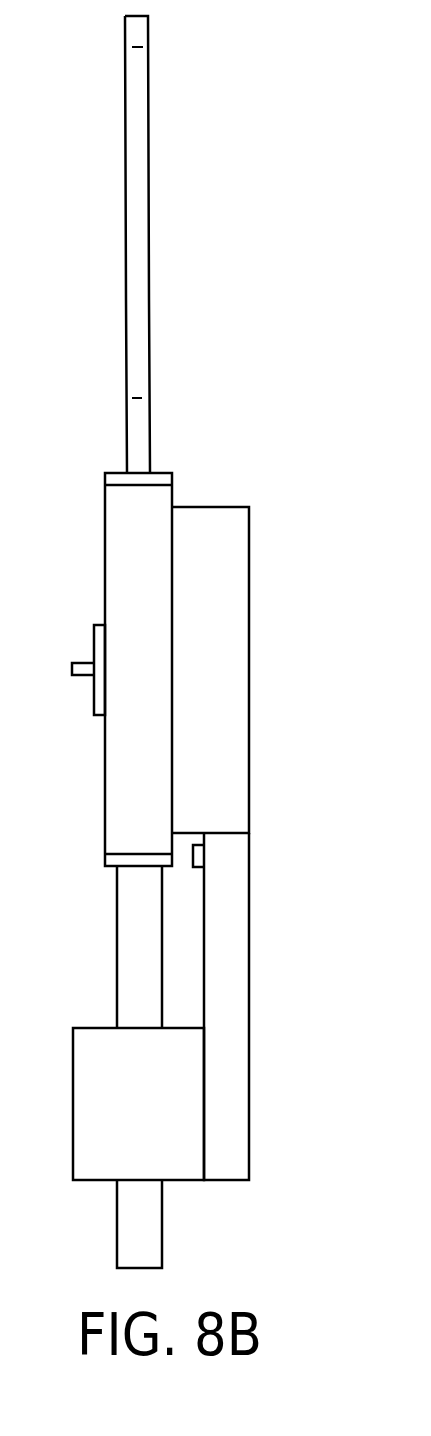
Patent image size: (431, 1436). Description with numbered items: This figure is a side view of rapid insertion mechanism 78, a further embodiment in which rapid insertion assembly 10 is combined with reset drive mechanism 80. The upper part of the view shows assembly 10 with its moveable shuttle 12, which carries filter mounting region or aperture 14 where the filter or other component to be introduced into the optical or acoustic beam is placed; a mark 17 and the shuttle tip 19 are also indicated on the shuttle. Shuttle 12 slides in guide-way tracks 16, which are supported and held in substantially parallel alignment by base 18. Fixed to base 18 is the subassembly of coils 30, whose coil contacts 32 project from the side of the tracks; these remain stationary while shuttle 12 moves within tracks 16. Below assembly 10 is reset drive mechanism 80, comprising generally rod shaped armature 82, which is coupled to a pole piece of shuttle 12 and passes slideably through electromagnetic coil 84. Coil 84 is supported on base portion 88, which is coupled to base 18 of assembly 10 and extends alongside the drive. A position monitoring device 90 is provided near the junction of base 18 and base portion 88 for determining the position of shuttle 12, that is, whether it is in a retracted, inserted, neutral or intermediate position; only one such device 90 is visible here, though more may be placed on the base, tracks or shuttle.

The rapid insertion assembly 10 is at (215, 362).
The moveable shuttle 12 is at (128, 422).
The filter mounting region or aperture 14 is at (135, 199).
The guide-way tracks 16 is at (107, 508).
The indicator mark 17 is at (139, 396).
The base 18 is at (217, 512).
The rod tip 19 is at (142, 16).
The coils 30 is at (93, 697).
The coil contacts 32 is at (82, 673).
The rapid insertion mechanism 78 is at (48, 235).
The reset drive mechanism 80 is at (46, 1218).
The armature 82 is at (125, 948).
The electromagnetic coil 84 is at (88, 1098).
The base portion 88 is at (230, 1180).
The position monitoring device 90 is at (190, 852).